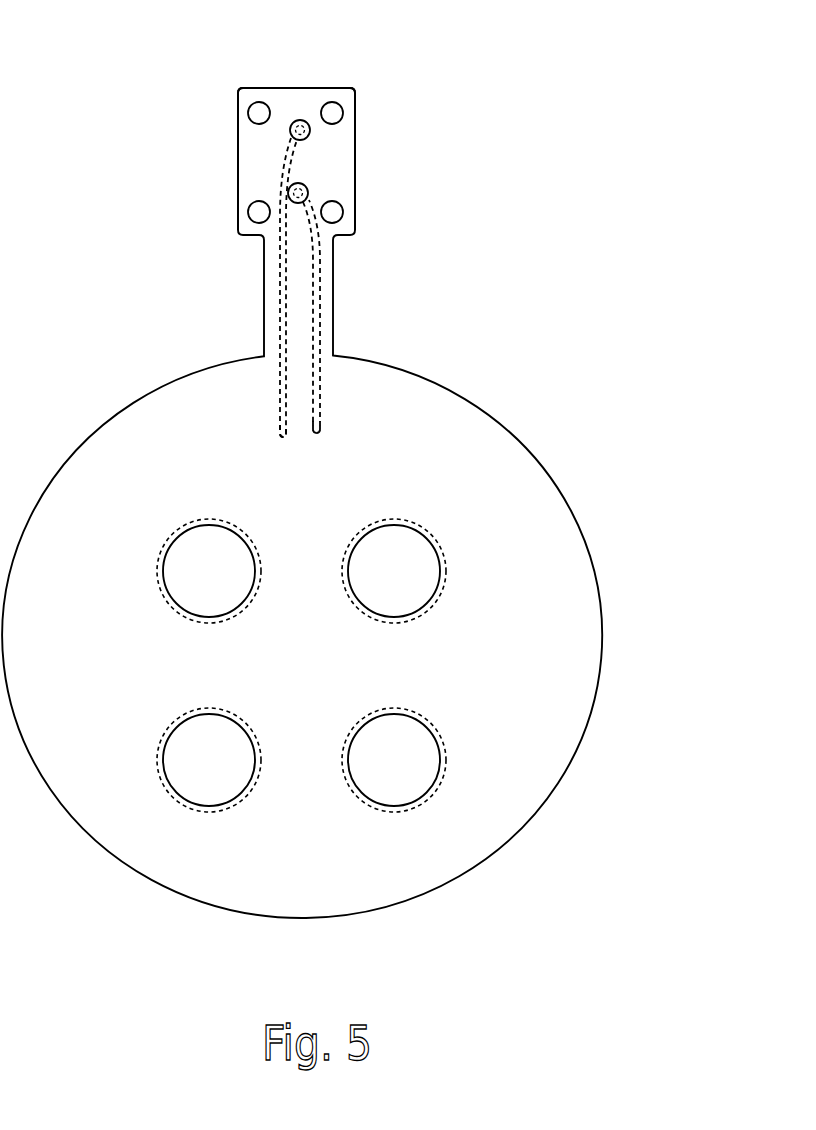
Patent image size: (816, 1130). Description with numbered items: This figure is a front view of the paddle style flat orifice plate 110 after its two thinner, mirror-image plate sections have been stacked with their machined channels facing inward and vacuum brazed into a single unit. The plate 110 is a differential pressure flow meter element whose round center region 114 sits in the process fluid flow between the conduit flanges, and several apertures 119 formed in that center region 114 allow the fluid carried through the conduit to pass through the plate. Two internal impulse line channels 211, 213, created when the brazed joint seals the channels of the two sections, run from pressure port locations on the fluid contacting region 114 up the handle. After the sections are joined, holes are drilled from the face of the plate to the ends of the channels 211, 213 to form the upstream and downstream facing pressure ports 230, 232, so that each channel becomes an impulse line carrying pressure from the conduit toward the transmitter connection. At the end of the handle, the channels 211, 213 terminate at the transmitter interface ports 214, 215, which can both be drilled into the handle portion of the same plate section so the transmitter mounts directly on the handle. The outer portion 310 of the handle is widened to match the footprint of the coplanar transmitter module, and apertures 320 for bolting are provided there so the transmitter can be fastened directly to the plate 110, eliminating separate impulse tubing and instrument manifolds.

The paddle style flat orifice plate 110 is at (364, 465).
The center region 114 is at (548, 568).
The apertures 119 is at (348, 578).
The impulse line channel 211 is at (321, 307).
The impulse line channel 213 is at (280, 333).
The transmitter interface port 214 is at (308, 191).
The transmitter interface port 215 is at (303, 121).
The pressure port 230 is at (320, 434).
The pressure port 232 is at (282, 437).
The outer portion of handle 310 is at (356, 137).
The apertures for bolting 320 is at (249, 115).